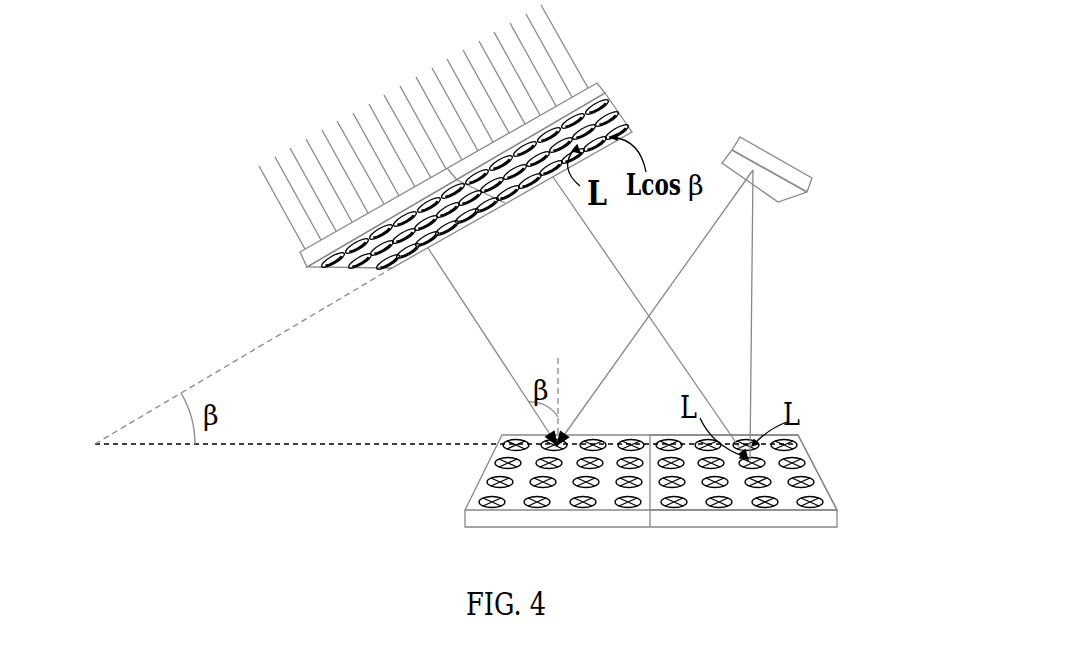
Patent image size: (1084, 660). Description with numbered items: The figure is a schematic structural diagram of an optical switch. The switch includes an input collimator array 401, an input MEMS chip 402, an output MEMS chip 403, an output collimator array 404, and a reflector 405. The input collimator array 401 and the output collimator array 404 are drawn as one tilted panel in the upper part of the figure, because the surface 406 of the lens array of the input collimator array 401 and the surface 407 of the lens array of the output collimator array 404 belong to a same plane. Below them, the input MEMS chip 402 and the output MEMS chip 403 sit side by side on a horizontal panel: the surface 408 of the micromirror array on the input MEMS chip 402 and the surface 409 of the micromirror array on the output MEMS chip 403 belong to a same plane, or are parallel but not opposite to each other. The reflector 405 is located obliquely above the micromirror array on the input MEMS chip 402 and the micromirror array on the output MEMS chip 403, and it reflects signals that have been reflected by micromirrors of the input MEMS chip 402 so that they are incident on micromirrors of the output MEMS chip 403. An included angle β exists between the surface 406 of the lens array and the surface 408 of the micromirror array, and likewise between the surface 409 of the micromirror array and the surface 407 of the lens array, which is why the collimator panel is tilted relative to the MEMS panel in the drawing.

The input collimator array 401 is at (466, 155).
The input MEMS chip 402 is at (649, 489).
The output MEMS chip 403 is at (823, 518).
The output collimator array 404 is at (597, 86).
The reflector 405 is at (783, 184).
The surface of lens array of the input collimator array 406 is at (391, 268).
The surface of lens array of the output collimator array 407 is at (615, 113).
The surface of micromirror array on the input MEMS chip 408 is at (485, 492).
The surface of micromirror array on the output MEMS chip 409 is at (808, 490).